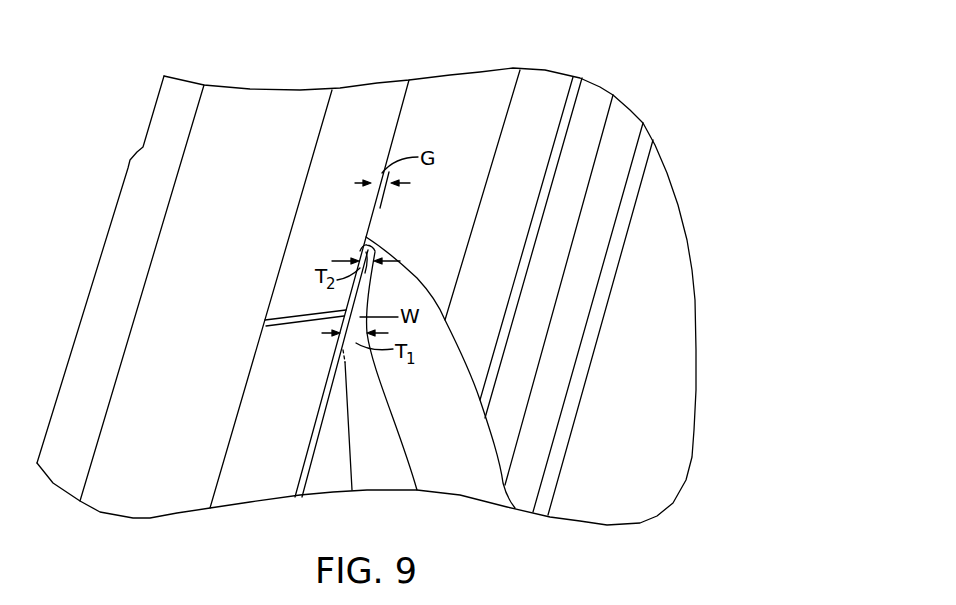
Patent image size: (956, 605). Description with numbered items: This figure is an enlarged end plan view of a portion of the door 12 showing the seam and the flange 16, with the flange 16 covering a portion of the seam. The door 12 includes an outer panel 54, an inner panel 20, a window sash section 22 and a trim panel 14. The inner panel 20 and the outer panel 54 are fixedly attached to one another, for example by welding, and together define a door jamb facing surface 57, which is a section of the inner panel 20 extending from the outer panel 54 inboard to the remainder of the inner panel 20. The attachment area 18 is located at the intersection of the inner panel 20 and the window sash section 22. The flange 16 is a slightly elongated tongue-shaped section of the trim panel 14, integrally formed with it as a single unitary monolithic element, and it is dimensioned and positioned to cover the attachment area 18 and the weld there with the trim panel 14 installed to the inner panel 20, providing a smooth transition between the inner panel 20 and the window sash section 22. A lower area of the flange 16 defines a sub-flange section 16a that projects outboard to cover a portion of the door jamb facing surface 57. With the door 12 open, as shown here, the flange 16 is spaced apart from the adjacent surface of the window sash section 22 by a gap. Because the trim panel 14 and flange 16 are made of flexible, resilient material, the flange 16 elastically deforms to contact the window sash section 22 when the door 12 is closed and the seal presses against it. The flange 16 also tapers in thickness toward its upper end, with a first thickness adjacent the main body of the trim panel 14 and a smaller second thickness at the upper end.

The door 12 is at (654, 71).
The trim panel 14 is at (467, 455).
The flange 16 is at (363, 290).
The sub-flange section 16a is at (327, 470).
The attachment area 18 is at (293, 327).
The inner panel 20 is at (159, 473).
The window sash section 22 is at (353, 108).
The outer panel 54 is at (102, 255).
The door jamb facing surface 57 is at (263, 118).